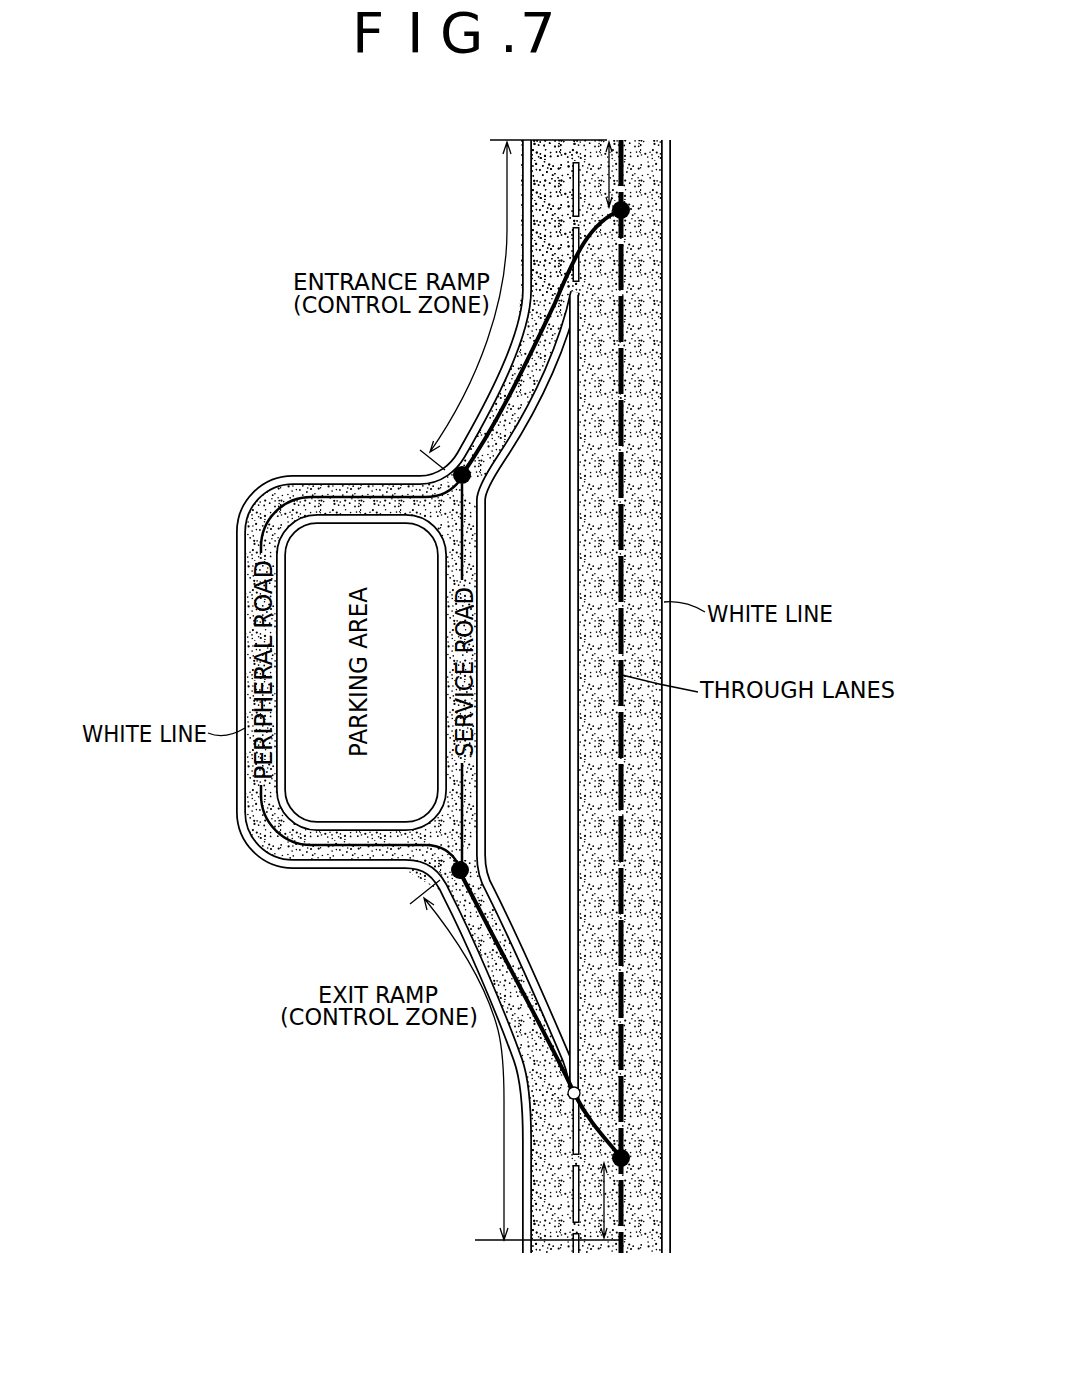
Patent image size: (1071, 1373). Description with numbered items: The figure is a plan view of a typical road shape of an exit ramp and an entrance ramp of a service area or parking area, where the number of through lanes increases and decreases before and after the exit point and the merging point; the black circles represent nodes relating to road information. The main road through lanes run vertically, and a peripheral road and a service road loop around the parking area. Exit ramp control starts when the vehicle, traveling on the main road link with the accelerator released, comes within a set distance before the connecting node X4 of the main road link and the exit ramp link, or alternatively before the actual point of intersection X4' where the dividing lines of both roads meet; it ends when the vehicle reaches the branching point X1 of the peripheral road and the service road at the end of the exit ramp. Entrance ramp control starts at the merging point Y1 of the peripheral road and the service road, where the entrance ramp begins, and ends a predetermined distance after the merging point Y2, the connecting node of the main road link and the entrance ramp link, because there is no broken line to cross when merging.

The merging point Y2 is at (630, 211).
The merging point Y1 is at (471, 477).
The branching point X1 is at (469, 866).
The connecting node X4 is at (672, 1150).
The point of intersection X4' is at (653, 1084).